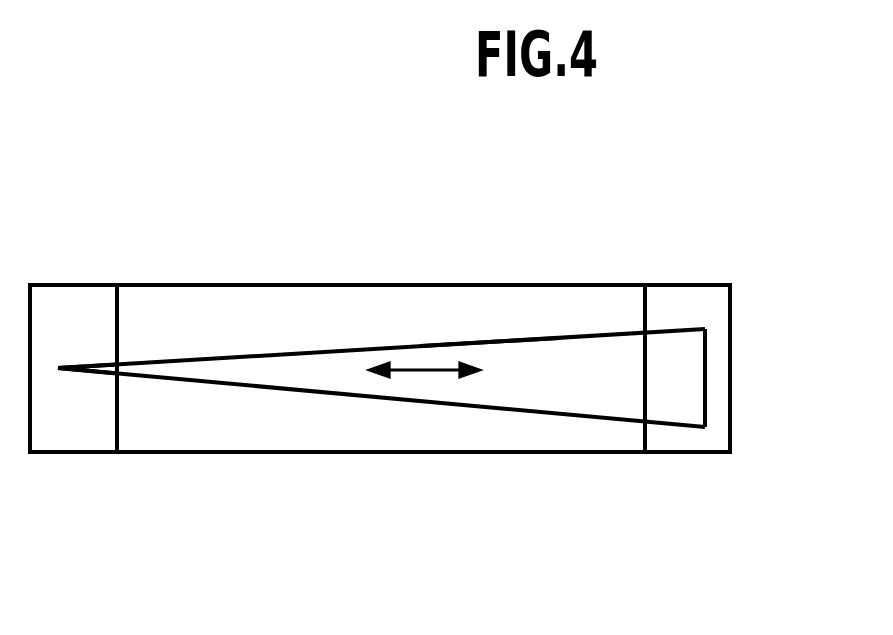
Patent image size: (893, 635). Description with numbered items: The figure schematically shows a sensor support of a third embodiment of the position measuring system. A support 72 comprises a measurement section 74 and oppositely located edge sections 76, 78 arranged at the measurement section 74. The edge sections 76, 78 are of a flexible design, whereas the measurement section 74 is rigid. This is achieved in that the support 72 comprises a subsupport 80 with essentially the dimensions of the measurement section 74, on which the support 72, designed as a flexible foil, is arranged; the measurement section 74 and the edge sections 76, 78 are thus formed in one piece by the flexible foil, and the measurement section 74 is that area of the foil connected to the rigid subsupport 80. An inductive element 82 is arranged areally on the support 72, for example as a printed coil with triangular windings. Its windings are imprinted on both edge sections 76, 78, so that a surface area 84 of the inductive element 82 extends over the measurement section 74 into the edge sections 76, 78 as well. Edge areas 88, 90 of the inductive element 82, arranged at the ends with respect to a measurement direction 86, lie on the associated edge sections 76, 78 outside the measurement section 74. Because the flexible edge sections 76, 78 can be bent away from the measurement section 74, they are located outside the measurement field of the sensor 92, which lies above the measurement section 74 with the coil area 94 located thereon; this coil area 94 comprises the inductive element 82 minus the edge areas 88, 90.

The support 72 is at (237, 278).
The measurement section 74 is at (273, 440).
The edge section 76 is at (57, 441).
The edge section 78 is at (677, 445).
The subsupport 80 is at (176, 285).
The inductive element 82 is at (533, 414).
The surface area 84 is at (527, 350).
The measurement direction 86 is at (410, 372).
The edge area 88 is at (103, 366).
The edge area 90 is at (693, 397).
The sensor 92 is at (205, 458).
The coil area 94 is at (485, 353).